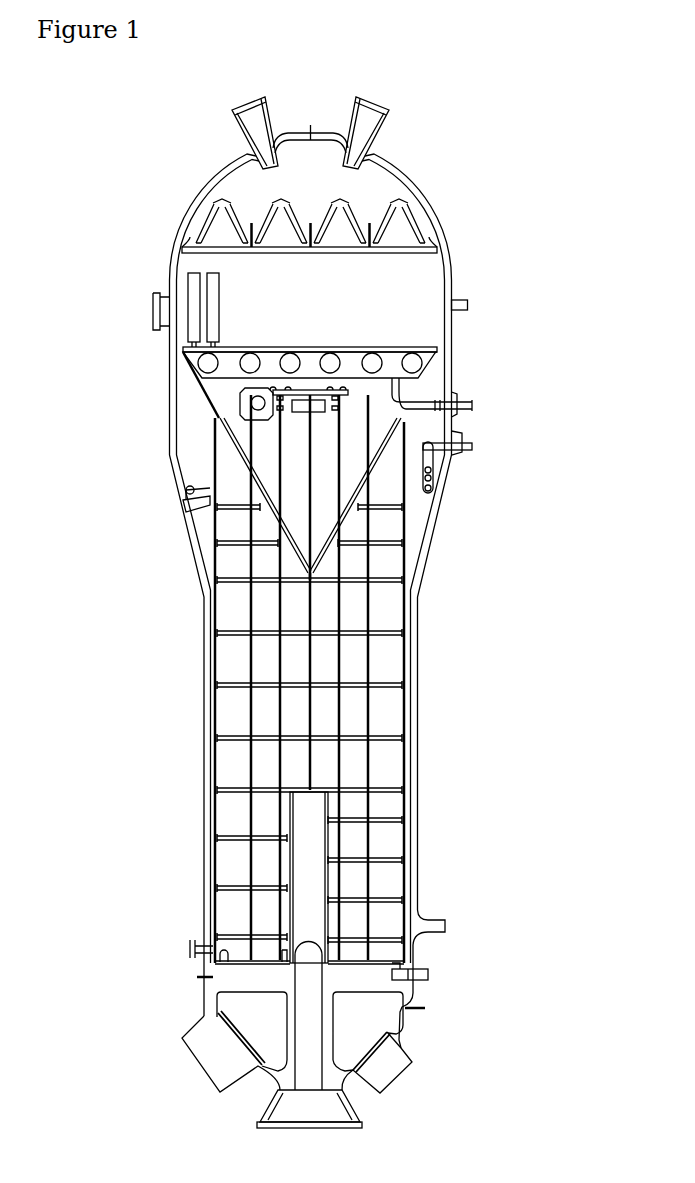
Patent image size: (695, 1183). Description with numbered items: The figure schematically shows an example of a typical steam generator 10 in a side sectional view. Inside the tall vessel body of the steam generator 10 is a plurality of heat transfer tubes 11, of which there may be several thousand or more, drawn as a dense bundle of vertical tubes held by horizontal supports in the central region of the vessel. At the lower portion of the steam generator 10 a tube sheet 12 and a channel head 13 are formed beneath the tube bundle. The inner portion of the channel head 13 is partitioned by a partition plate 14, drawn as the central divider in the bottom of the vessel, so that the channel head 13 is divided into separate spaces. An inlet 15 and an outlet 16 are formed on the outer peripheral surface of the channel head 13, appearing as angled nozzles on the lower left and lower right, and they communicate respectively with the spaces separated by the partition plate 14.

The steam generator 10 is at (492, 632).
The heat transfer tubes 11 is at (370, 712).
The tube sheet 12 is at (367, 978).
The channel head 13 is at (412, 1022).
The partition plate 14 is at (292, 1025).
The inlet 15 is at (202, 1067).
The outlet 16 is at (398, 1078).